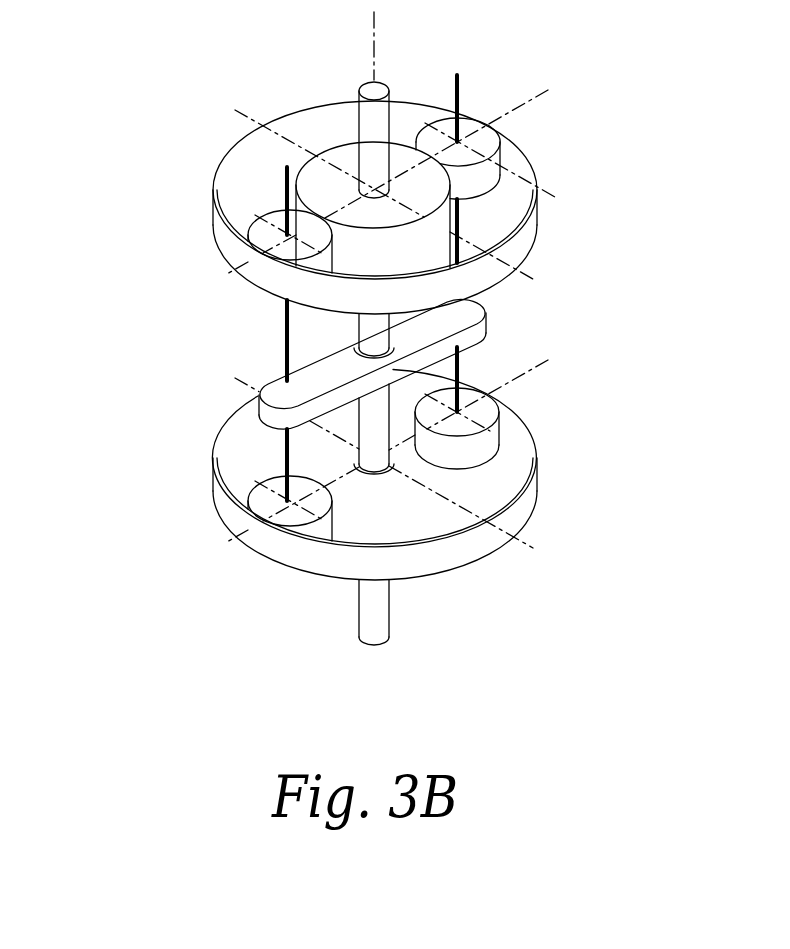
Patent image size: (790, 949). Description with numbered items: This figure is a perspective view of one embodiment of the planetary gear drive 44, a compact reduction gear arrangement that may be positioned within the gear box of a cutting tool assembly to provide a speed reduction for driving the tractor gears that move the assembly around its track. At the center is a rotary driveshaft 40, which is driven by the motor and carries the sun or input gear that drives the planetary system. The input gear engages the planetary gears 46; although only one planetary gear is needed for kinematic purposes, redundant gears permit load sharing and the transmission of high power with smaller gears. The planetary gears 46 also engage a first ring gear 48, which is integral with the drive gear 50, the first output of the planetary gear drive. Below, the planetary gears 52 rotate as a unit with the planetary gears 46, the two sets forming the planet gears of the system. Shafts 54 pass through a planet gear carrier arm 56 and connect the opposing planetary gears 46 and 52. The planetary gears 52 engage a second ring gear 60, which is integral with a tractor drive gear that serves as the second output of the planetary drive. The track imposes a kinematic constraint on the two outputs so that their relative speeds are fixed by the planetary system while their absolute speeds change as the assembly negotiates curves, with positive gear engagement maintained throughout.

The rotary driveshaft 40 is at (386, 88).
The planetary gear drive 44 is at (223, 305).
The planetary gears 46 is at (500, 156).
The first ring gear 48 is at (538, 212).
The drive gear 50 is at (306, 160).
The planetary gears 52 is at (493, 438).
The shafts 54 is at (462, 90).
The planet gear carrier arm 56 is at (485, 314).
The second ring gear 60 is at (532, 510).